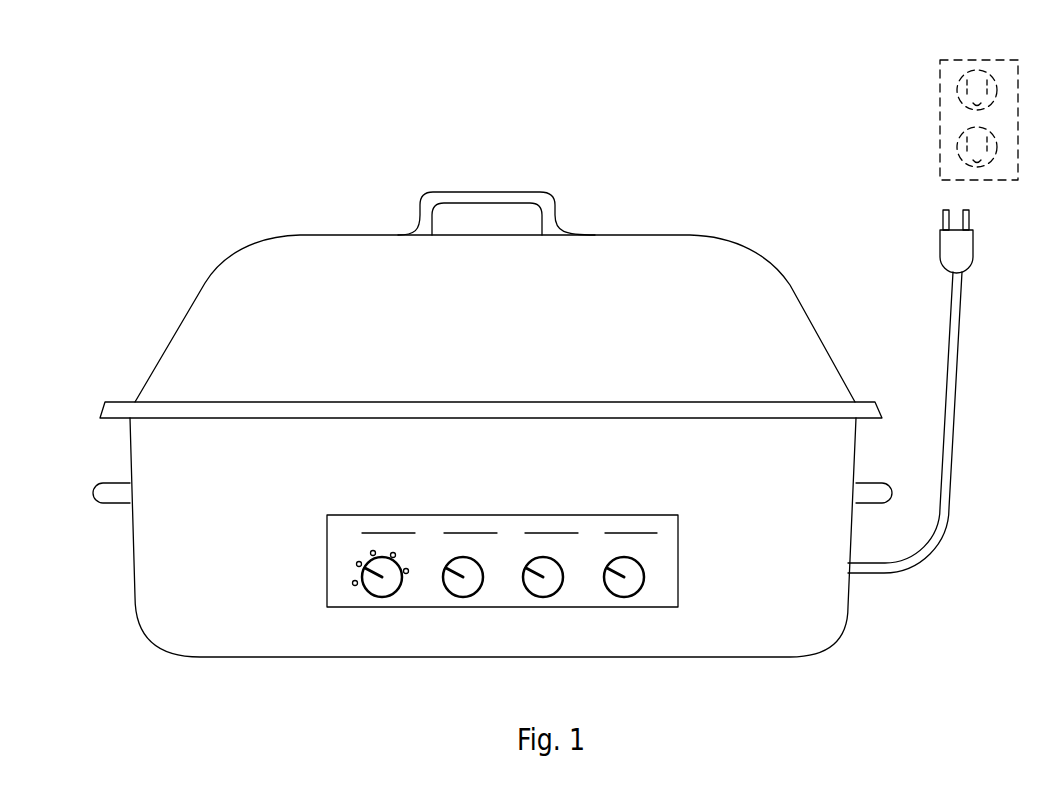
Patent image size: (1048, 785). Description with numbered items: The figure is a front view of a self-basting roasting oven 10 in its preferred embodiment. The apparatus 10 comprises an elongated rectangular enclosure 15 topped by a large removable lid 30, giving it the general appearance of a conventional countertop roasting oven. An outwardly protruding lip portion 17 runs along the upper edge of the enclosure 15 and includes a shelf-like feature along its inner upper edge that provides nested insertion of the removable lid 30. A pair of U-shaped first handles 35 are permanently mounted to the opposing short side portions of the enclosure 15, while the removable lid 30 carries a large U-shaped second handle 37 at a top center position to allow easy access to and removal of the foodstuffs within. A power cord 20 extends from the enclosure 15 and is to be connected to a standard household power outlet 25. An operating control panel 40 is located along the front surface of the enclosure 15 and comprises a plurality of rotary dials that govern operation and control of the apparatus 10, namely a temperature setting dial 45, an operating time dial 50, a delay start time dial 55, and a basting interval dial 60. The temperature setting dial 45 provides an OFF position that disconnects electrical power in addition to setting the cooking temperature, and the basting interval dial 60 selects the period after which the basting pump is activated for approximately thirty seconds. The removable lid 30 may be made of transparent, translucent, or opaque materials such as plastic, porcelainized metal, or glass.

The self-basting roasting oven 10 is at (128, 113).
The enclosure 15 is at (170, 618).
The lip portion 17 is at (117, 402).
The power cord 20 is at (943, 391).
The power outlet 25 is at (938, 110).
The removable lid 30 is at (280, 262).
The first handles 35 is at (98, 505).
The second handle 37 is at (545, 192).
The operating control panel 40 is at (327, 575).
The temperature setting dial 45 is at (382, 597).
The operating time dial 50 is at (463, 597).
The delay start time dial 55 is at (546, 597).
The basting interval dial 60 is at (642, 588).